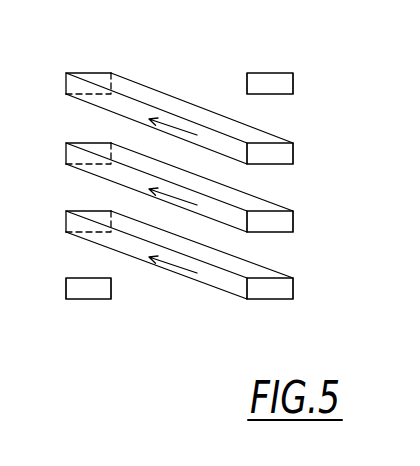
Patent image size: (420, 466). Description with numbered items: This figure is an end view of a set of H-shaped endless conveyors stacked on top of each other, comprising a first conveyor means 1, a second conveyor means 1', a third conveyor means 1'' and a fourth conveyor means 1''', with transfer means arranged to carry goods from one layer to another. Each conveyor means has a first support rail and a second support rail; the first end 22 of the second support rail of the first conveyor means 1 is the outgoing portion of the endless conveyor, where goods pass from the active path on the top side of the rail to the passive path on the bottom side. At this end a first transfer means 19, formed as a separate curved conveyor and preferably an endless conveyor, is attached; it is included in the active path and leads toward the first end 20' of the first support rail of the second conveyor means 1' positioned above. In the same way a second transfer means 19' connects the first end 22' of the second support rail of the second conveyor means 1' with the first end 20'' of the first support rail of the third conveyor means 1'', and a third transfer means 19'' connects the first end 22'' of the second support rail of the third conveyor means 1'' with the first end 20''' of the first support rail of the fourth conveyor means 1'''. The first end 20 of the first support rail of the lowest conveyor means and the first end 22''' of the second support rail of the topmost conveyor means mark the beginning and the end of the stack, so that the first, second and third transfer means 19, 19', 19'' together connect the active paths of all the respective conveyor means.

The conveyor means 1 is at (222, 288).
The second conveyor means 1' is at (224, 254).
The third conveyor means 1'' is at (226, 92).
The fourth conveyor means 1''' is at (318, 76).
The transfer means 19 is at (179, 288).
The second transfer means 19' is at (179, 254).
The third transfer means 19'' is at (179, 89).
The first end of the first support rail 20 is at (69, 290).
The first end of the first support rail 20' is at (69, 224).
The first end of the first support rail 20'' is at (69, 155).
The first end of the first support rail 20''' is at (69, 85).
The first end of the second support rail 22 is at (299, 276).
The first end of the second support rail 22' is at (302, 208).
The first end of the second support rail 22'' is at (304, 142).
The first end of the second support rail 22''' is at (305, 72).